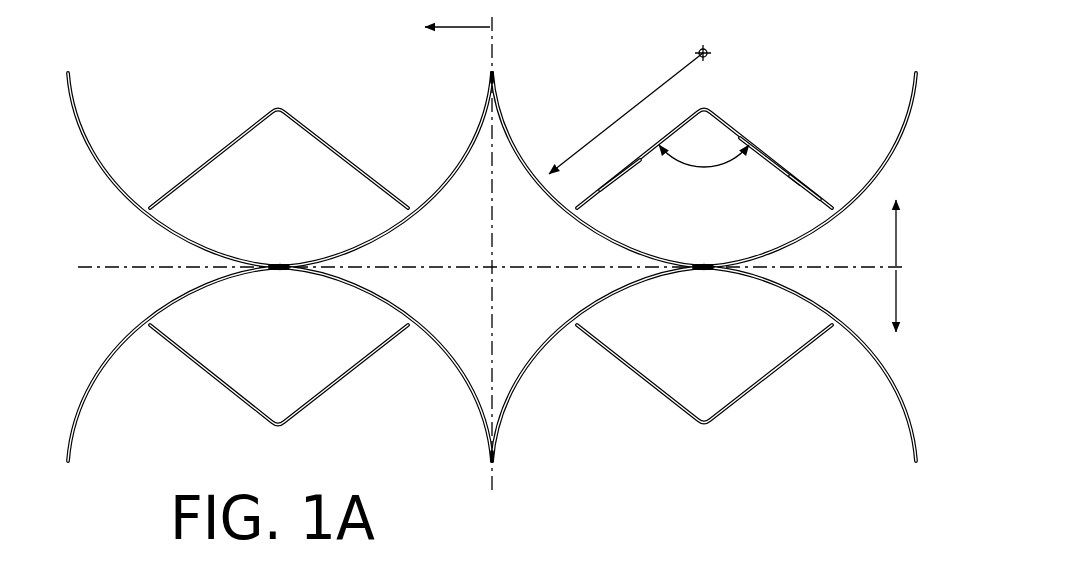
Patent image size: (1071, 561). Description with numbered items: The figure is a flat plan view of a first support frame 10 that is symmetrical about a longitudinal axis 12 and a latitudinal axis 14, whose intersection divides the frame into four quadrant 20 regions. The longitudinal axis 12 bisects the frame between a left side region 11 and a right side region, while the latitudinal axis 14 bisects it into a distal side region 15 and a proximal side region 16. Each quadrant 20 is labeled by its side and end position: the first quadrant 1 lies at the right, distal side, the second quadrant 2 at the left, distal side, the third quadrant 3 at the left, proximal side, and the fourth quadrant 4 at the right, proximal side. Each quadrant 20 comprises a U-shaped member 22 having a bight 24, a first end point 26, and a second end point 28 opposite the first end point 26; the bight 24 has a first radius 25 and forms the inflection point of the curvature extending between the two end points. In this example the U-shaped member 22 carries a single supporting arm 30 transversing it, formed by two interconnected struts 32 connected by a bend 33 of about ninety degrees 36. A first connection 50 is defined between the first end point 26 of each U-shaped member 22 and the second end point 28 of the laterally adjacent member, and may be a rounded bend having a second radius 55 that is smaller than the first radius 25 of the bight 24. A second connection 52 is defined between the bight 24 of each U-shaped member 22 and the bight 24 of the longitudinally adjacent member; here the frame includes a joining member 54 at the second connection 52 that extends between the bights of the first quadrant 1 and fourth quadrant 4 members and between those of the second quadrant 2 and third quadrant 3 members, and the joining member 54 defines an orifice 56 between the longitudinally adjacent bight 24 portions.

The first quadrant 1 is at (704, 133).
The second quadrant 2 is at (280, 143).
The third quadrant 3 is at (280, 384).
The fourth quadrant 4 is at (704, 384).
The first support frame 10 is at (182, 392).
The left side region 11 is at (396, 37).
The longitudinal axis 12 is at (496, 27).
The latitudinal axis 14 is at (103, 273).
The distal side region 15 is at (916, 197).
The proximal side region 16 is at (916, 370).
The quadrant 20 is at (765, 78).
The U-shaped member 22 is at (523, 148).
The bight 24 is at (706, 261).
The first radius 25 is at (637, 104).
The first end point 26 is at (499, 73).
The second end point 28 is at (903, 76).
The supporting arm 30 is at (778, 160).
The struts 32 is at (618, 178).
The bend 33 is at (706, 108).
The angle of about 90 degrees 36 is at (702, 167).
The first connection 50 is at (489, 74).
The second connection 52 is at (622, 282).
The joining member 54 is at (772, 278).
The second radius 55 is at (490, 82).
The orifice 56 is at (705, 273).